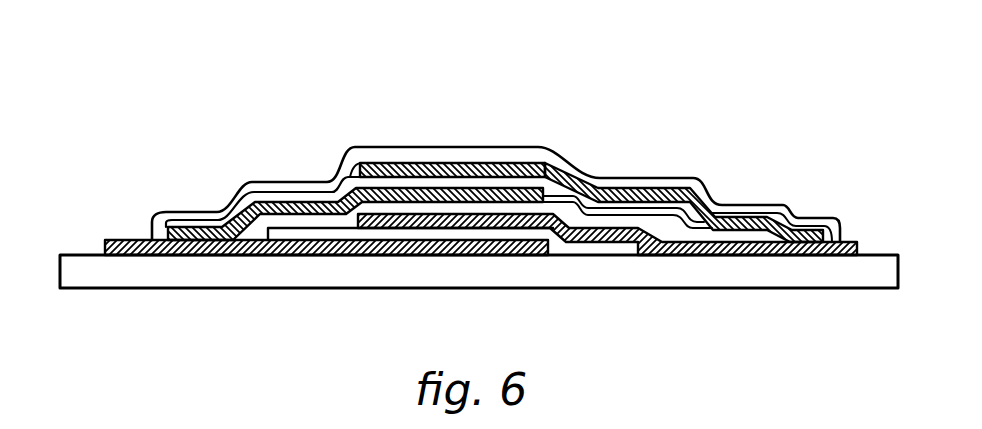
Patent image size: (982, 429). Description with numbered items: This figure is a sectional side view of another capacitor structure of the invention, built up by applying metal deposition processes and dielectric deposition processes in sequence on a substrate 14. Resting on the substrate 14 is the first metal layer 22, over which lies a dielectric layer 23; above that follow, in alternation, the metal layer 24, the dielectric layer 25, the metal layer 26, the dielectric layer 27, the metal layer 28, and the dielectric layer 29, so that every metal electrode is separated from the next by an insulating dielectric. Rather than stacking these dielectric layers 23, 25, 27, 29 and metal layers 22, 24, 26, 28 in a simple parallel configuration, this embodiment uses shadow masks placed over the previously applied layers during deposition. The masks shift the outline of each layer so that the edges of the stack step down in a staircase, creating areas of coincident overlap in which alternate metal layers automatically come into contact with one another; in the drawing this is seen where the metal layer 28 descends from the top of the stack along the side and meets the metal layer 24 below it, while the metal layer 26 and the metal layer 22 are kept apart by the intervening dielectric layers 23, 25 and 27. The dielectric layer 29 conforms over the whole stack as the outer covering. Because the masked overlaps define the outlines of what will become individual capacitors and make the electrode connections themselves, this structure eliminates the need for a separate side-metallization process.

The substrate 14 is at (710, 273).
The metal layer 22 is at (210, 248).
The dielectric layer 23 is at (287, 233).
The metal layer 24 is at (375, 227).
The dielectric layer 25 is at (450, 205).
The metal layer 26 is at (395, 183).
The dielectric layer 27 is at (482, 182).
The metal layer 28 is at (600, 172).
The dielectric layer 29 is at (633, 180).